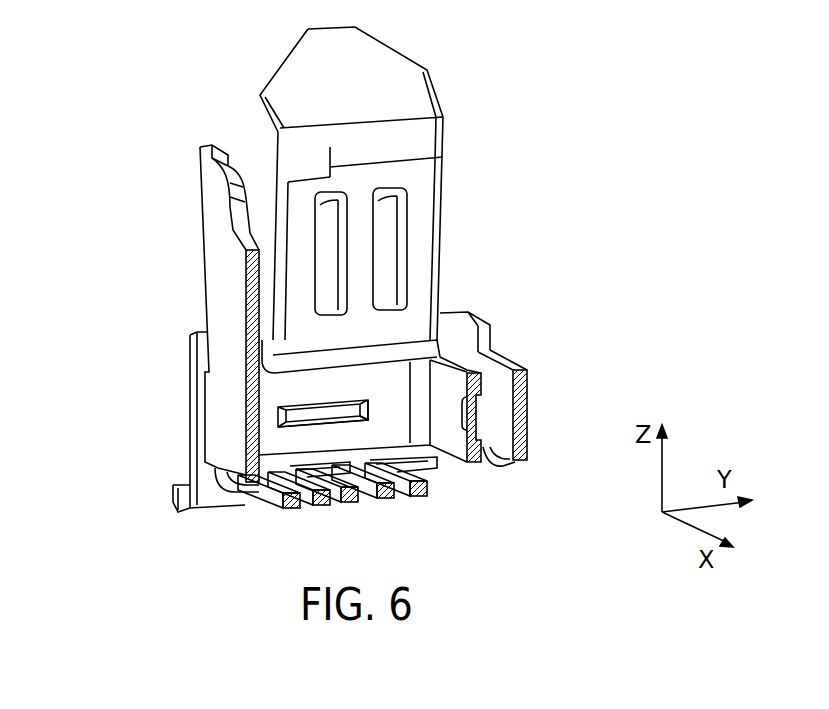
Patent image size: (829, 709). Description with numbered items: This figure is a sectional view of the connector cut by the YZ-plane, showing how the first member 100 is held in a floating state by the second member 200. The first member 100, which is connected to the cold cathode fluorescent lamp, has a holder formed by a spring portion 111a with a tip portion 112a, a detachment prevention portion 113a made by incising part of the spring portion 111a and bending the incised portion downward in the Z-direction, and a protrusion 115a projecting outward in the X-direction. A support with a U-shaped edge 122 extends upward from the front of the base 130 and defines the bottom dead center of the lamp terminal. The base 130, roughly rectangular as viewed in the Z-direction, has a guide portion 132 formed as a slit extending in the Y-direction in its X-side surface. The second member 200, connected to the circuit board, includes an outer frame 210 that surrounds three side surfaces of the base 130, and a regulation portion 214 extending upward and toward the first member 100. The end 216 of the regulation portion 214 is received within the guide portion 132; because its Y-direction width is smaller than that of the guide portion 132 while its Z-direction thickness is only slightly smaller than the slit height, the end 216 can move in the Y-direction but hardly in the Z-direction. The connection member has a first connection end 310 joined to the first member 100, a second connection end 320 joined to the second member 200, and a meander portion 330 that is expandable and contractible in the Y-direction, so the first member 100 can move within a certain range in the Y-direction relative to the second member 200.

The first member 100 is at (369, 193).
The spring portion 111a is at (420, 140).
The tip portion 112a is at (366, 43).
The detachment prevention portion 113a is at (294, 165).
The protrusion 115a is at (323, 208).
The U-shaped edge 122 is at (242, 242).
The base 130 is at (467, 366).
The guide portion 132 is at (367, 401).
The second member 200 is at (386, 351).
The outer frame 210 is at (527, 403).
The regulation portion 214 is at (293, 420).
The end 216 is at (278, 407).
The first connection end 310 is at (247, 493).
The second connection end 320 is at (500, 467).
The meander portion 330 is at (422, 497).